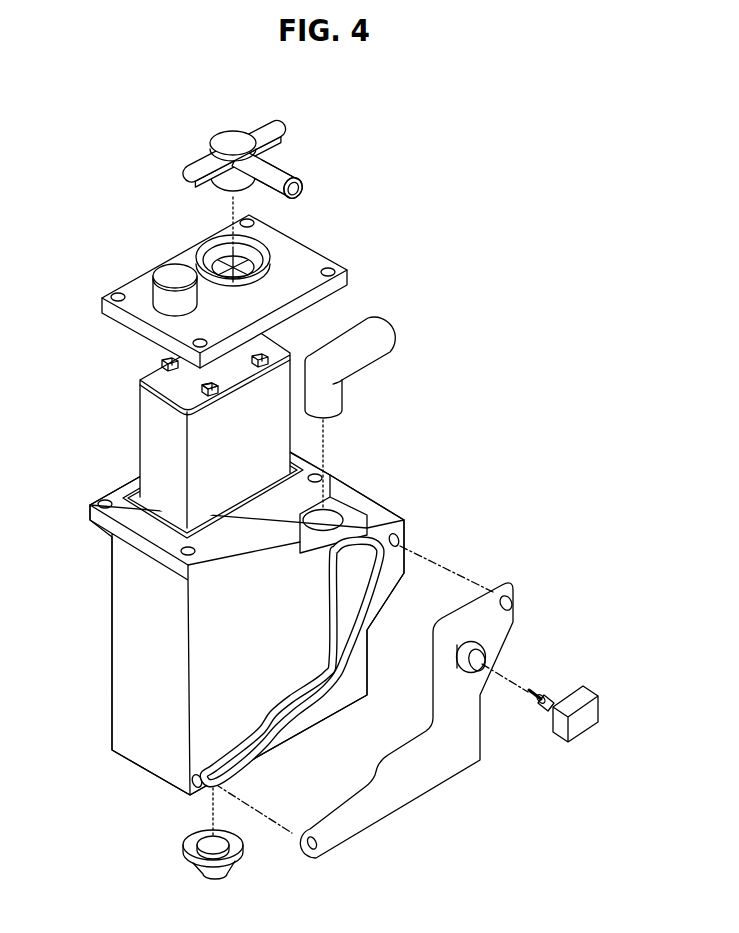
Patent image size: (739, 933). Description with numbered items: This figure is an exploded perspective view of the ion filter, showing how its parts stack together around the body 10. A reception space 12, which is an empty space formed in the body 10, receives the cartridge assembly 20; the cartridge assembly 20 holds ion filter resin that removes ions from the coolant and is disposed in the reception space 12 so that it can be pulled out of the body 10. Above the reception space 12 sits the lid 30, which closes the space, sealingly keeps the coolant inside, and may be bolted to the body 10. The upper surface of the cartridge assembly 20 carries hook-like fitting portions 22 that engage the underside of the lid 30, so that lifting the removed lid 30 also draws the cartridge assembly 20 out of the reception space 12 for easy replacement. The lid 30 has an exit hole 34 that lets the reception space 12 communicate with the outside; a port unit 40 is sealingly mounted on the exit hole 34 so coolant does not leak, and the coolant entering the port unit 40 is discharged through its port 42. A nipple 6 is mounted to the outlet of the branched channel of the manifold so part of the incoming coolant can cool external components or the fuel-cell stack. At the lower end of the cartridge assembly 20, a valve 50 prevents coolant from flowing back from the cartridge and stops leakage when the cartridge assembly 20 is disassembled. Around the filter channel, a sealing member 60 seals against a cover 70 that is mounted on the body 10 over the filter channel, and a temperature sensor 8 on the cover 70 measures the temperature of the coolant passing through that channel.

The nipple 6 is at (377, 332).
The temperature sensor 8 is at (573, 735).
The body 10 is at (127, 657).
The reception space 12 is at (130, 490).
The cartridge assembly 20 is at (157, 380).
The fitting portion 22 is at (197, 388).
The lid 30 is at (135, 287).
The exit hole 34 is at (230, 253).
The port unit 40 is at (216, 128).
The port 42 is at (285, 173).
The valve 50 is at (188, 845).
The sealing member 60 is at (382, 573).
The cover 70 is at (497, 641).